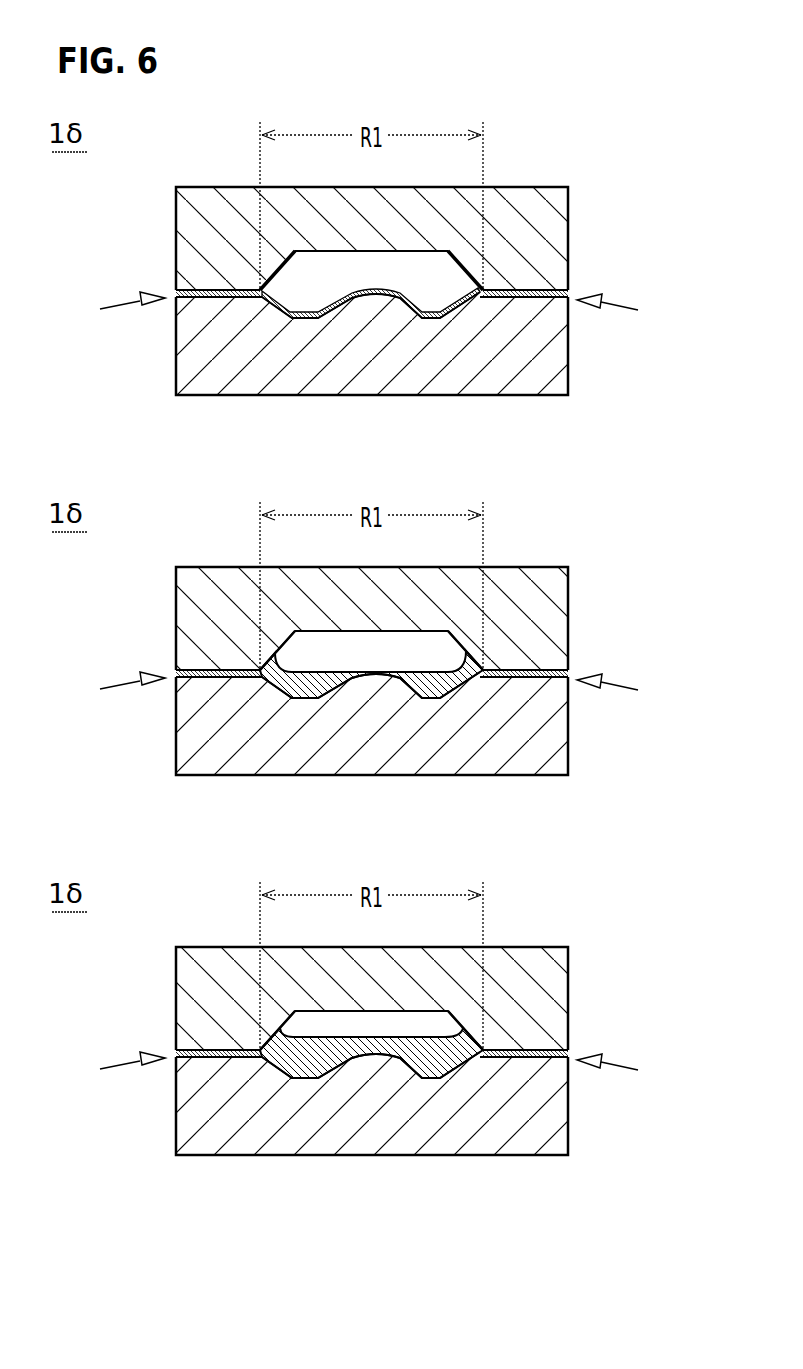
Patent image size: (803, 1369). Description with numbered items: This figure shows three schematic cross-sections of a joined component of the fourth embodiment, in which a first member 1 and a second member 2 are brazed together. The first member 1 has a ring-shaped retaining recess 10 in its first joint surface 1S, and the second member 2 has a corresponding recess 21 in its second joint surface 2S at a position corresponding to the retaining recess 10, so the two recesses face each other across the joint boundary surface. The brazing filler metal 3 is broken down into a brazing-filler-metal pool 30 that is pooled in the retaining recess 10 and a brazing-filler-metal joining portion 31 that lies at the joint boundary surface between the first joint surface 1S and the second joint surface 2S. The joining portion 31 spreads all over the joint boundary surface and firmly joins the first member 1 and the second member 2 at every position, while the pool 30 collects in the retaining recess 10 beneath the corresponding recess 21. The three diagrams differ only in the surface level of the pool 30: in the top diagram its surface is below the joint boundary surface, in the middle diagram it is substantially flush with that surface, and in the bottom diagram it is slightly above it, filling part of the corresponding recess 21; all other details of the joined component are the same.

The first member 1 is at (568, 352).
The second member 2 is at (568, 235).
The brazing filler metal 3 is at (275, 600).
The retaining recess 10 is at (414, 282).
The corresponding recess 21 is at (423, 253).
The brazing-filler-metal pool 30 is at (282, 257).
The brazing-filler-metal joining portion 31 is at (210, 289).
The first joint surface 1S is at (546, 290).
The second joint surface 2S is at (530, 297).